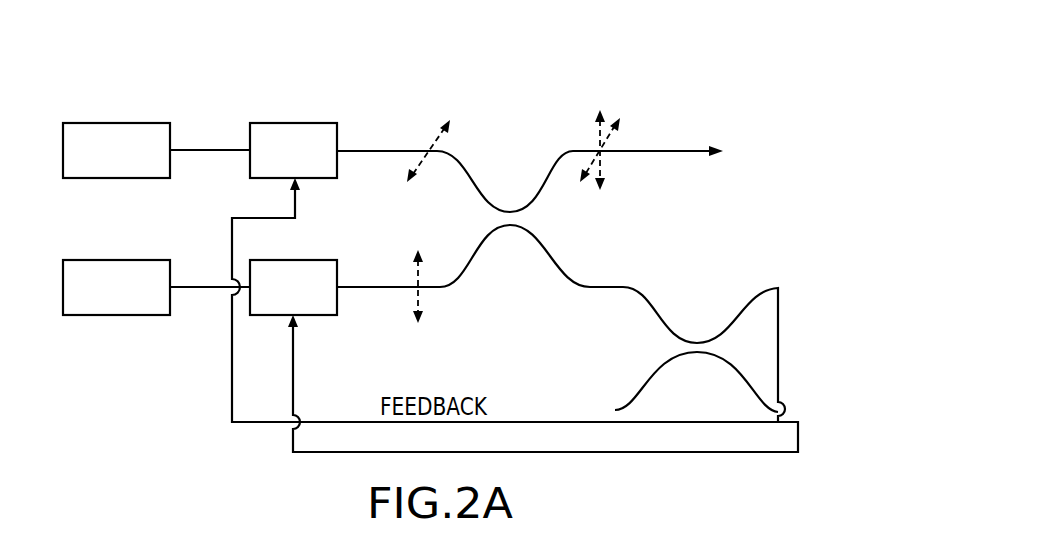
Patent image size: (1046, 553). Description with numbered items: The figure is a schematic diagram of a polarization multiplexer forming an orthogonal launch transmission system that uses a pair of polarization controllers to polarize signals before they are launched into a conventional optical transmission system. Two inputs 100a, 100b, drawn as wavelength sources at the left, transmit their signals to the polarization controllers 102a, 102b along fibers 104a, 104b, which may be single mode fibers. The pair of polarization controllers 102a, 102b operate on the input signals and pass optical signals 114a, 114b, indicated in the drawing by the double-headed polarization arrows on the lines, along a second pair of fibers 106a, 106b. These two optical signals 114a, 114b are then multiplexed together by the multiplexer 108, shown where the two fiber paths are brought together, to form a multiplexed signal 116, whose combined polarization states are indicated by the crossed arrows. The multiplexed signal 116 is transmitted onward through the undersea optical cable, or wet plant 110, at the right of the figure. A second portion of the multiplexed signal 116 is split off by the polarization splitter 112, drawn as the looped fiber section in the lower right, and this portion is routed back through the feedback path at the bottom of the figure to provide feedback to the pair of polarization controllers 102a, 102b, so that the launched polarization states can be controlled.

The input 100a is at (85, 123).
The input 100b is at (85, 260).
The polarization controller 102a is at (293, 123).
The polarization controller 102b is at (293, 260).
The fiber 104a is at (195, 150).
The fiber 104b is at (205, 287).
The fiber 106a is at (385, 151).
The fiber 106b is at (380, 288).
The multiplexer 108 is at (521, 140).
The wet plant 110 is at (685, 113).
The polarization splitter 112 is at (697, 312).
The optical signal 114a is at (433, 148).
The optical signal 114b is at (420, 295).
The multiplexed signal 116 is at (622, 98).